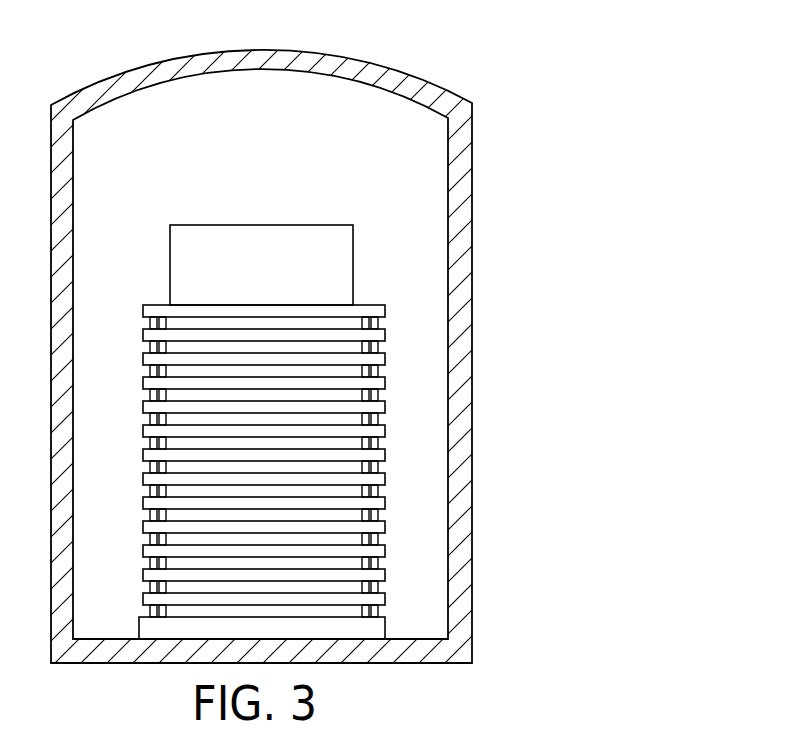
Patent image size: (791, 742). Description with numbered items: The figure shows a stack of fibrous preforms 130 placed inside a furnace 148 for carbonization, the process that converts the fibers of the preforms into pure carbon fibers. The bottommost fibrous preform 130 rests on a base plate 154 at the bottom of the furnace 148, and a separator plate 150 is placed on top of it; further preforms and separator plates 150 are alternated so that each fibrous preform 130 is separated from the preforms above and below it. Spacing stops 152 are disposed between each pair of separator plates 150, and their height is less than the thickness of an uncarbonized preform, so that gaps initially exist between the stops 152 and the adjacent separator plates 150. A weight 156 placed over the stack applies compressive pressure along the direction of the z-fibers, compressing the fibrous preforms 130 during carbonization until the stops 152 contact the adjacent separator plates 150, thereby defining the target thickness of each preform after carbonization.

The fibrous preform 130 is at (347, 328).
The furnace 148 is at (452, 101).
The separator plate 150 is at (162, 308).
The stop 152 is at (152, 325).
The base plate 154 is at (368, 627).
The weight 156 is at (305, 236).